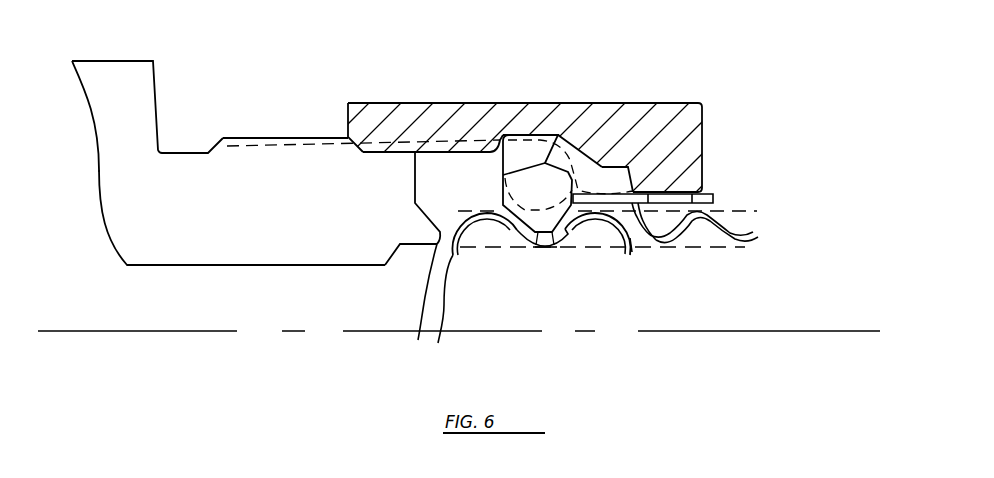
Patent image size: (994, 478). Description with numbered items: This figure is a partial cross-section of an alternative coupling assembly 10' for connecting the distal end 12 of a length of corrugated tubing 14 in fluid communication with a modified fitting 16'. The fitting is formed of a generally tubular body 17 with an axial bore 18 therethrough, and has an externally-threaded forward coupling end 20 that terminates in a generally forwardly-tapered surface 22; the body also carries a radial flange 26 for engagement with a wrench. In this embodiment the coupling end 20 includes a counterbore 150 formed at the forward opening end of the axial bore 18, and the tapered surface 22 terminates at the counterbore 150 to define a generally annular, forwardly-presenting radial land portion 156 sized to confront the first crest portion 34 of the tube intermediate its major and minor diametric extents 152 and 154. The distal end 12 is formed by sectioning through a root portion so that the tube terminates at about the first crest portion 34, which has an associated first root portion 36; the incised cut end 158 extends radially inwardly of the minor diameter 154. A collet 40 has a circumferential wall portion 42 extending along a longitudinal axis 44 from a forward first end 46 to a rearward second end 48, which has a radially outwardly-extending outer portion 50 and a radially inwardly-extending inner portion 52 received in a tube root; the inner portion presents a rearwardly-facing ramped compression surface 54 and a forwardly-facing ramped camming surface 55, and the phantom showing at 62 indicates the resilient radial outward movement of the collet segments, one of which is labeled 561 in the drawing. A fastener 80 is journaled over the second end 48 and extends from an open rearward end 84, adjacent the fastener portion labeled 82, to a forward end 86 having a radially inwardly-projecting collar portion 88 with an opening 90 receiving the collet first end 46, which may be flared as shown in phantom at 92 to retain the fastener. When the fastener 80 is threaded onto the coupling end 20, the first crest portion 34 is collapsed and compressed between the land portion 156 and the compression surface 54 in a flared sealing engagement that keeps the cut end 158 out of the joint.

The coupling assembly 10' is at (766, 112).
The distal end 12 is at (452, 256).
The corrugated tubing 14 is at (547, 260).
The modified fitting 16' is at (194, 101).
The tubular body 17 is at (196, 152).
The axial bore 18 is at (203, 304).
The forward coupling end 20 is at (288, 137).
The tapered surface 22 is at (422, 216).
The radial flange 26 is at (127, 61).
The first crest portion 34 is at (474, 212).
The first root portion 36 is at (565, 248).
The collet 40 is at (731, 178).
The circumferential wall portion 42 is at (625, 207).
The longitudinal axis 44 is at (822, 331).
The first end 46 is at (703, 210).
The second end 48 is at (495, 152).
The outer portion 50 is at (597, 104).
The inner portion 52 is at (541, 249).
The compression surface 54 is at (510, 230).
The camming surface 55 is at (585, 233).
The spring end 561 is at (643, 207).
The phantom segment position 62 is at (548, 135).
The fastener 80 is at (704, 70).
The flange underside 82 is at (452, 150).
The open rearward end 84 is at (343, 122).
The forward end 86 is at (704, 119).
The collar portion 88 is at (704, 157).
The opening 90 is at (704, 179).
The flared first end 92 is at (712, 193).
The counterbore 150 is at (408, 258).
The major diametric extent 152 is at (757, 210).
The minor diametric extent 154 is at (746, 247).
The radial land portion 156 is at (420, 338).
The cut end 158 is at (437, 340).